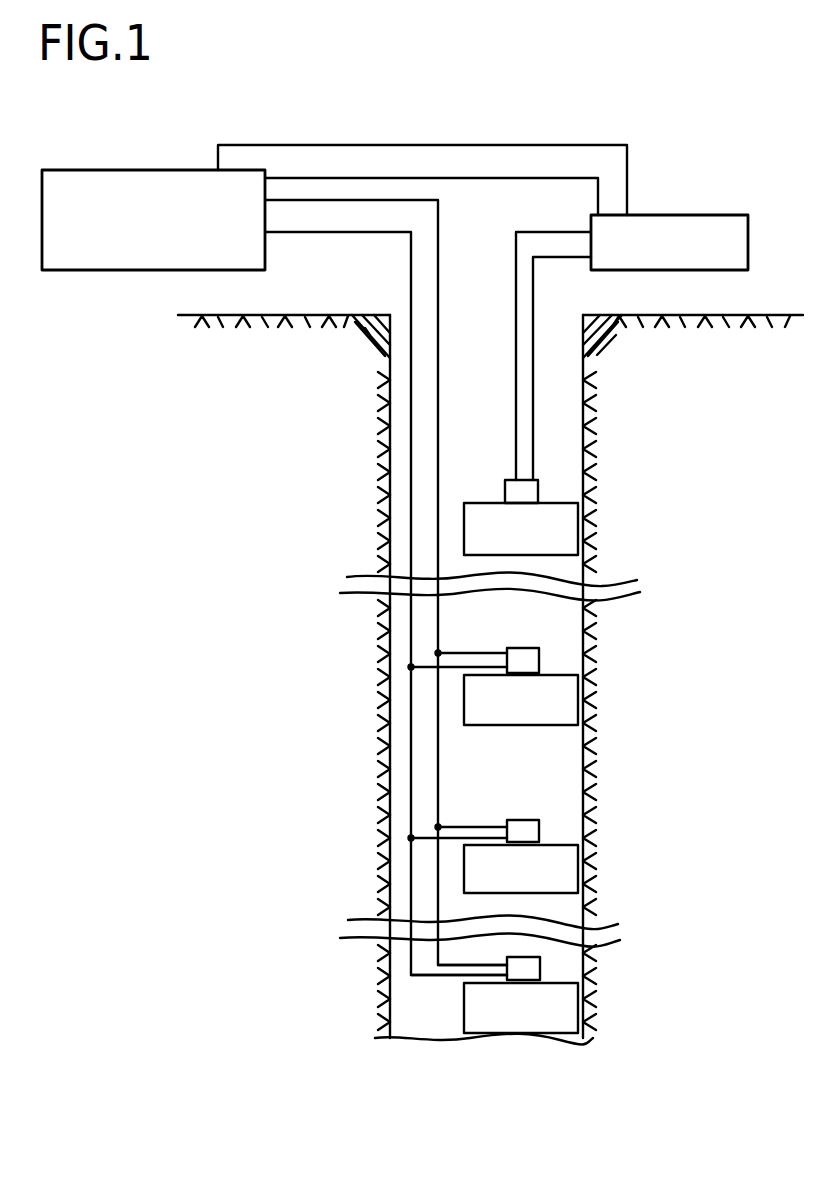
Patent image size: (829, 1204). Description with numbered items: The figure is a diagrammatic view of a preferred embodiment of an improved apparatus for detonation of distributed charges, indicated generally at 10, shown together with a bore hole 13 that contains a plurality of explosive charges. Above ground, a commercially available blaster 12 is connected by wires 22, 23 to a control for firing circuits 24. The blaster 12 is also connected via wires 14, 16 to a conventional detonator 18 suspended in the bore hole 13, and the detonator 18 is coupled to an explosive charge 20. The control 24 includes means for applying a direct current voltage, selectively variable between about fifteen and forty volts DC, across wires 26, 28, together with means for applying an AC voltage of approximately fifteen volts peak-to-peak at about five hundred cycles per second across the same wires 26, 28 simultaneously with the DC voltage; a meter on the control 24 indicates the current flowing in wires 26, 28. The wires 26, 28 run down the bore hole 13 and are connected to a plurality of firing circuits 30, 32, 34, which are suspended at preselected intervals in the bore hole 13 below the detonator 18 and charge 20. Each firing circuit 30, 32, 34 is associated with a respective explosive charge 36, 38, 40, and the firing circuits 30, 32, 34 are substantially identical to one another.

The apparatus for detonation of distributed charges 10 is at (551, 99).
The blaster 12 is at (683, 215).
The bore hole 13 is at (590, 756).
The wire 14 is at (516, 399).
The wire 16 is at (533, 440).
The detonator 18 is at (538, 492).
The explosive charge 20 is at (578, 532).
The wire 22 is at (347, 145).
The wire 23 is at (468, 178).
The control for firing circuits 24 is at (87, 170).
The wire 26 is at (438, 414).
The wire 28 is at (411, 483).
The firing circuit 30 is at (539, 660).
The firing circuit 32 is at (539, 832).
The firing circuit 34 is at (540, 965).
The explosive charge 36 is at (578, 700).
The explosive charge 38 is at (578, 882).
The explosive charge 40 is at (578, 1015).